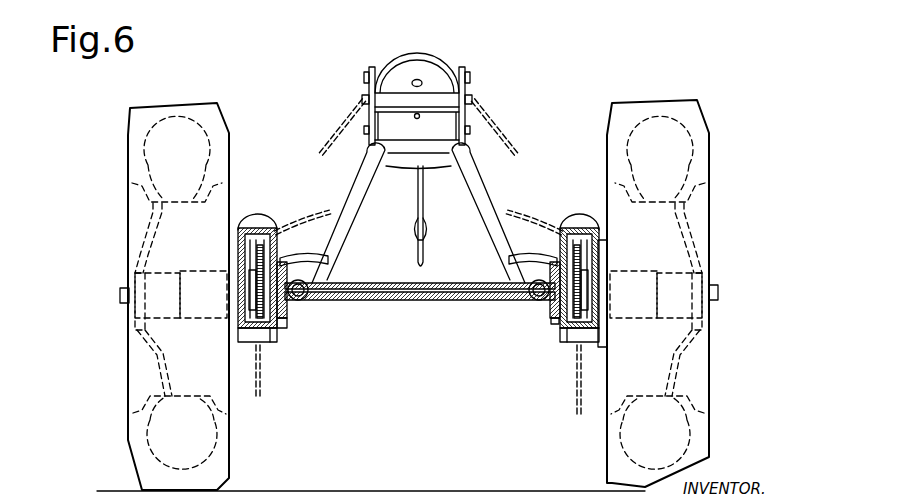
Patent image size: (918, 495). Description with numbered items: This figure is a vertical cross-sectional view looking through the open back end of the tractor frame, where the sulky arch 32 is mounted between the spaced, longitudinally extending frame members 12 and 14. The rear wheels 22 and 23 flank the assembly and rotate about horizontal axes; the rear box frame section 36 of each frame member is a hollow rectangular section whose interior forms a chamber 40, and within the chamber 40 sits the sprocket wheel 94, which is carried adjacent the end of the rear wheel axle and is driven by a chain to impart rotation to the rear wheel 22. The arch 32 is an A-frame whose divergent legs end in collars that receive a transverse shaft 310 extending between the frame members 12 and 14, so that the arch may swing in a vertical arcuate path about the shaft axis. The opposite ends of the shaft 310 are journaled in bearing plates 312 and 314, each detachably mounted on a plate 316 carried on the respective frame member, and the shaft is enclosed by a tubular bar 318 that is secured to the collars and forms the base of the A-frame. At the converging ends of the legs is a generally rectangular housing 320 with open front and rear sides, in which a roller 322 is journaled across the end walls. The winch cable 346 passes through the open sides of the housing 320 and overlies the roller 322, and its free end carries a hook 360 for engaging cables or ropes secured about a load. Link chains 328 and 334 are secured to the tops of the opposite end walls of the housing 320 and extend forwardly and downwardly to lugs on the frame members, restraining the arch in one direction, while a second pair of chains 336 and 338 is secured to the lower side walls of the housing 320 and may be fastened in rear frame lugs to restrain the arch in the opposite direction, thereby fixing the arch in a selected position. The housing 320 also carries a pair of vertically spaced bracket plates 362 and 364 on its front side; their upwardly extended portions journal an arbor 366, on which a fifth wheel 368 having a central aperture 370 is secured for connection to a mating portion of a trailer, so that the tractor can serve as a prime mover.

The frame member 12 is at (282, 328).
The frame member 14 is at (598, 340).
The rear wheel 22 is at (128, 390).
The rear wheel 23 is at (710, 361).
The sulky arch 32 is at (423, 90).
The box frame section 36 is at (277, 333).
The chamber 40 is at (237, 238).
The sprocket wheel 94 is at (258, 257).
The shaft 310 is at (392, 302).
The bearing plate 312 is at (288, 264).
The bearing plate 314 is at (556, 326).
The plate 316 is at (283, 258).
The tubular bar 318 is at (434, 301).
The housing 320 is at (405, 168).
The roller 322 is at (385, 130).
The link chain 328 is at (335, 137).
The chain 334 is at (500, 138).
The chain 336 is at (286, 228).
The chain 338 is at (512, 216).
The cable 346 is at (417, 207).
The hook 360 is at (427, 250).
The bracket plate 362 is at (368, 86).
The bracket plate 364 is at (470, 86).
The arbor 366 is at (368, 78).
The fifth wheel 368 is at (414, 55).
The central aperture 370 is at (421, 80).